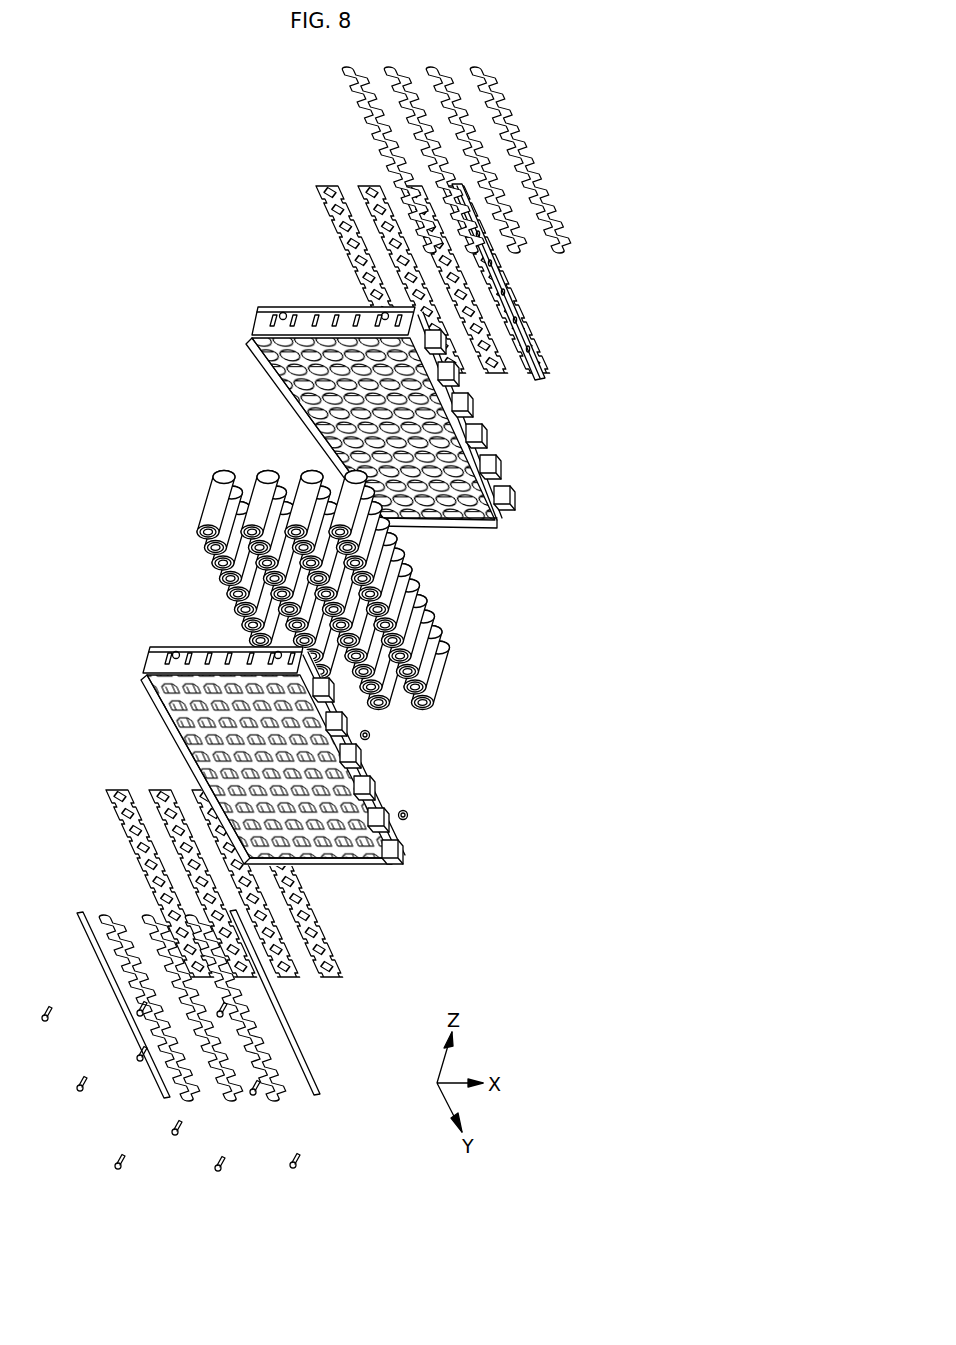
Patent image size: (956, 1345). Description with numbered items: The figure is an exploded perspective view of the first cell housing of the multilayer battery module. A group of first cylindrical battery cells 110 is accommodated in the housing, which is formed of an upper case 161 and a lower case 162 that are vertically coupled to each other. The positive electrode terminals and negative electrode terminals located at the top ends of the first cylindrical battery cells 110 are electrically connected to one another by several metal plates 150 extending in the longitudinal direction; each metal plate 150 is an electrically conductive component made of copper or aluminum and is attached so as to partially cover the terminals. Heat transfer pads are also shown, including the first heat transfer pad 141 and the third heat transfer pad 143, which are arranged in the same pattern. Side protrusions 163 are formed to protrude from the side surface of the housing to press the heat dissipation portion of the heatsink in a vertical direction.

The first cylindrical battery cells 110 is at (428, 623).
The first heat transfer pad 141 is at (521, 145).
The third heat transfer pad 143 is at (280, 1088).
The metal plate 150 is at (519, 331).
The upper case 161 is at (422, 418).
The lower case 162 is at (405, 775).
The side protrusion 163 is at (484, 425).